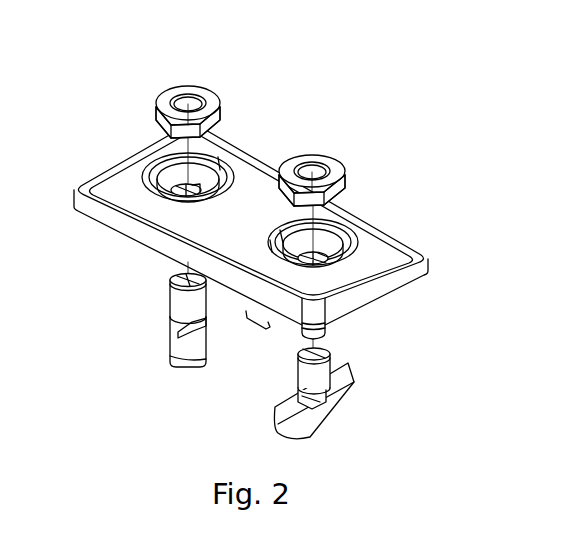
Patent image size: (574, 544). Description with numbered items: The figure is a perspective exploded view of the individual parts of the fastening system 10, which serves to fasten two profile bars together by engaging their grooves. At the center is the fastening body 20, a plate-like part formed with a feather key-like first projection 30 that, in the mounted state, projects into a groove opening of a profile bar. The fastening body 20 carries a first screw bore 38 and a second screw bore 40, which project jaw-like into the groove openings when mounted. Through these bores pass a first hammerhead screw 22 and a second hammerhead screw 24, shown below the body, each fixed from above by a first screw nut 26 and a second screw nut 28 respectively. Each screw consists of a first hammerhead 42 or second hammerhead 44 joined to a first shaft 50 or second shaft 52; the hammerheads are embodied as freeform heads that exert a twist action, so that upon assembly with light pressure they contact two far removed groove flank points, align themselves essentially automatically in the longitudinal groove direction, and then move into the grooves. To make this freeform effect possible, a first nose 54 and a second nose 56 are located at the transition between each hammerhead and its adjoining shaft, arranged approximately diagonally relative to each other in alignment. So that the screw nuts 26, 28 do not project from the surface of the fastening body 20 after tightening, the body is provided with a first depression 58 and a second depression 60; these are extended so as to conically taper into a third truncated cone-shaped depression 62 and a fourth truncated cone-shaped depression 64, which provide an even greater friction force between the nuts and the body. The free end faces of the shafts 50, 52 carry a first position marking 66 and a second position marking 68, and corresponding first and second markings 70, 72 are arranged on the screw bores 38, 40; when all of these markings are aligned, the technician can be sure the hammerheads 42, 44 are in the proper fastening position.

The fastening system 10 is at (390, 112).
The fastening body 20 is at (133, 237).
The first hammerhead screw 22 is at (365, 393).
The second hammerhead screw 24 is at (145, 317).
The first screw nut 26 is at (335, 173).
The second screw nut 28 is at (208, 93).
The first projection 30 is at (253, 318).
The first screw bore 38 is at (333, 263).
The second screw bore 40 is at (143, 177).
The first hammerhead 42 is at (310, 423).
The second hammerhead 44 is at (178, 342).
The first shaft 50 is at (317, 373).
The second shaft 52 is at (180, 302).
The first nose 54 is at (277, 410).
The second nose 56 is at (200, 332).
The first depression 58 is at (333, 232).
The second depression 60 is at (167, 160).
The third truncated cone-shaped depression 62 is at (325, 267).
The fourth truncated cone-shaped depression 64 is at (217, 170).
The first position marking 66 is at (297, 358).
The second position marking 68 is at (177, 282).
The first marking 70 is at (272, 247).
The second marking 72 is at (197, 178).